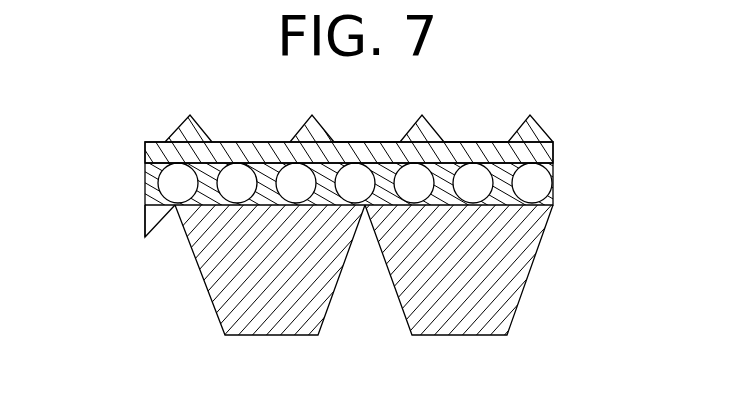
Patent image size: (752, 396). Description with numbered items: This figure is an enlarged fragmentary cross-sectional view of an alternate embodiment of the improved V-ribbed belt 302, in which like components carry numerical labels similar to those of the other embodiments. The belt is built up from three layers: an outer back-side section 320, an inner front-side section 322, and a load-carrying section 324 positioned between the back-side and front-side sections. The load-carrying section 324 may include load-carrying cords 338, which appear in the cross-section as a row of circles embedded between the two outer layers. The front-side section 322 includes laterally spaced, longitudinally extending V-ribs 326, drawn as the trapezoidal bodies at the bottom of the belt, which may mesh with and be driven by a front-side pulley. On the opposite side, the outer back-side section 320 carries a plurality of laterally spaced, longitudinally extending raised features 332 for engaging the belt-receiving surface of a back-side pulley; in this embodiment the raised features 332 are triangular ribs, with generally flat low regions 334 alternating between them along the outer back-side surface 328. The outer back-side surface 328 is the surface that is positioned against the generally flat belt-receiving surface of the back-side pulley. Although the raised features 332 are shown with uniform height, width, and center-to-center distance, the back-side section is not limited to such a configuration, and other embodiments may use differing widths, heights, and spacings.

The V-ribbed belt 302 is at (583, 197).
The outer back-side section 320 is at (145, 152).
The inner front-side section 322 is at (145, 222).
The load-carrying section 324 is at (145, 186).
The V-ribs 326 is at (327, 275).
The outer back-side surface 328 is at (163, 140).
The raised features 332 is at (532, 115).
The flat low regions 334 is at (477, 142).
The load-carrying cords 338 is at (240, 190).